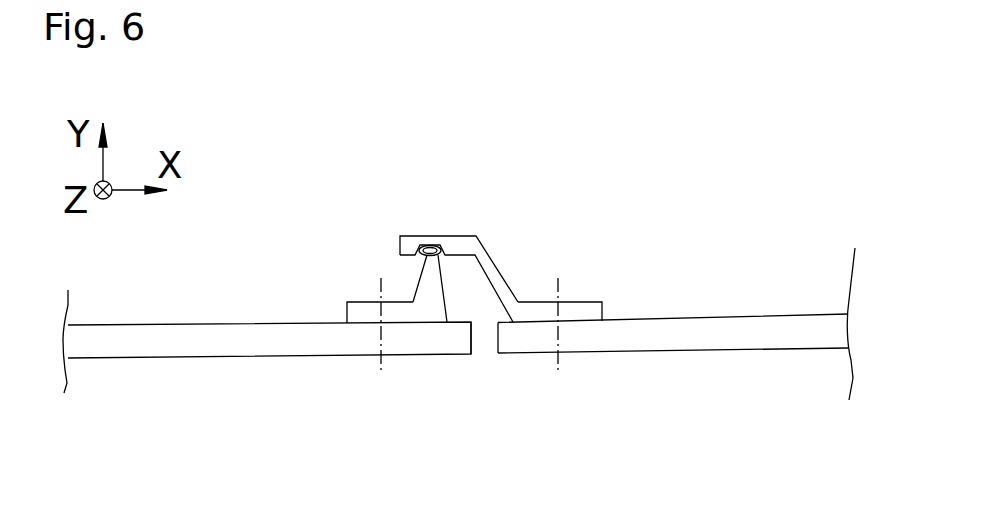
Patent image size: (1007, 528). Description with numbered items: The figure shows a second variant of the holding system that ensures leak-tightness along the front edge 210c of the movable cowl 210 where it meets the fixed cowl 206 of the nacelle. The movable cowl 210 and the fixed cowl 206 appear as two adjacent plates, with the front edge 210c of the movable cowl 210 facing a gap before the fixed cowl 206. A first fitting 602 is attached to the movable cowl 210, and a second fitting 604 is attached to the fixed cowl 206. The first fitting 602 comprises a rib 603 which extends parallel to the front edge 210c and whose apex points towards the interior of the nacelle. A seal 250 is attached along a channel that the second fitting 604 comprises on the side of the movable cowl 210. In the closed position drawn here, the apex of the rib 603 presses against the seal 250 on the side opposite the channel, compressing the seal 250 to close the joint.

The fixed cowl 206 is at (763, 337).
The movable cowl 210 is at (100, 350).
The front edge 210c is at (472, 340).
The seal 250 is at (430, 250).
The first fitting 602 is at (350, 312).
The rib 603 is at (430, 278).
The second fitting 604 is at (578, 308).